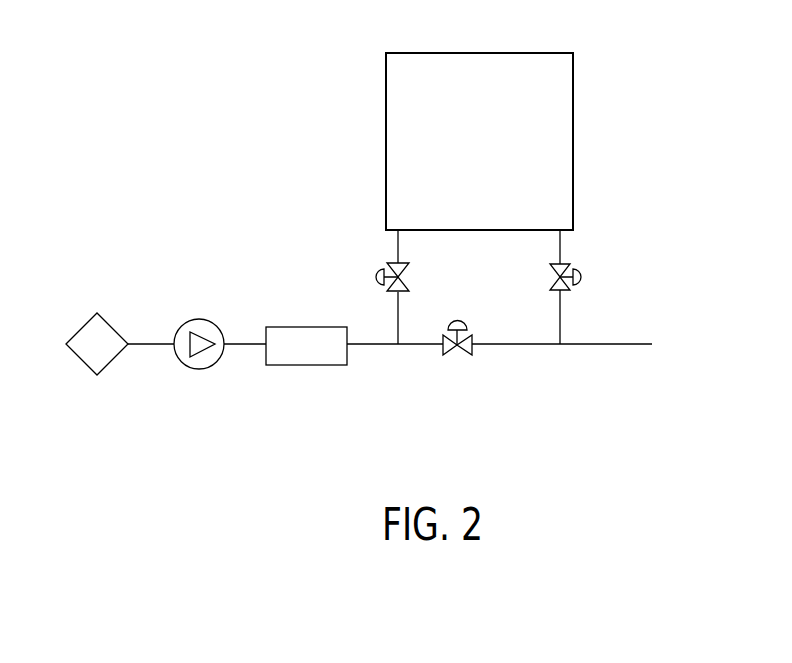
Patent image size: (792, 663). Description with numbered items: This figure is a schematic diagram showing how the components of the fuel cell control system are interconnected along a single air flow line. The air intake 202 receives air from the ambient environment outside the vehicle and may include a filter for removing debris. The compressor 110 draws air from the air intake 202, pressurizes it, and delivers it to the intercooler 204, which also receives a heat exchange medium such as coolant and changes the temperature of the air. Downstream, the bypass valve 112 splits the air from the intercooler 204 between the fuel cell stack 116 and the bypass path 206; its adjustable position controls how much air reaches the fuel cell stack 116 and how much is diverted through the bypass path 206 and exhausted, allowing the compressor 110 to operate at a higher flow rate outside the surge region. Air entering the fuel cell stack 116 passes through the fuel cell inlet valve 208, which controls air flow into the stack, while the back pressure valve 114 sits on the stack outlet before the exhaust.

The air intake 202 is at (108, 324).
The compressor 110 is at (203, 319).
The intercooler 204 is at (286, 327).
The fuel cell stack 116 is at (575, 149).
The fuel cell inlet valve 208 is at (393, 264).
The back pressure valve 114 is at (563, 265).
The bypass valve 112 is at (467, 325).
The bypass path 206 is at (535, 346).